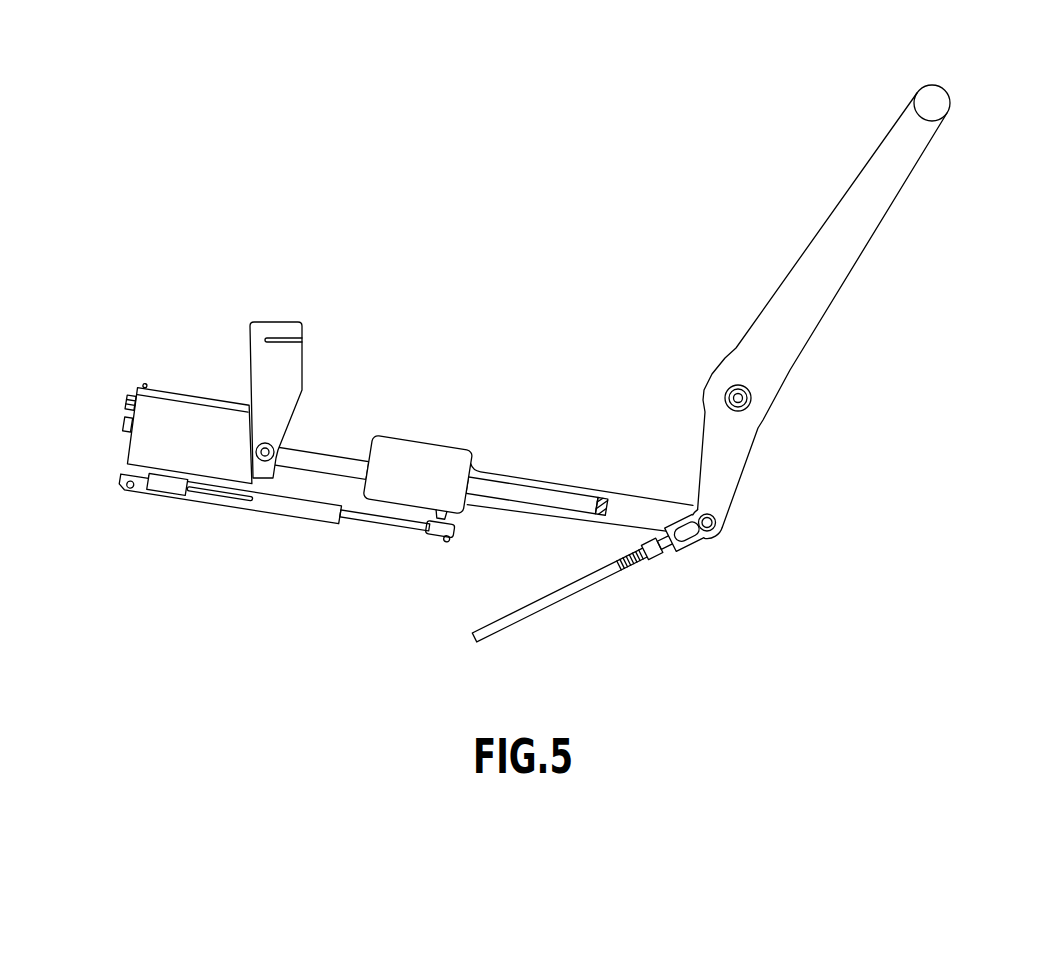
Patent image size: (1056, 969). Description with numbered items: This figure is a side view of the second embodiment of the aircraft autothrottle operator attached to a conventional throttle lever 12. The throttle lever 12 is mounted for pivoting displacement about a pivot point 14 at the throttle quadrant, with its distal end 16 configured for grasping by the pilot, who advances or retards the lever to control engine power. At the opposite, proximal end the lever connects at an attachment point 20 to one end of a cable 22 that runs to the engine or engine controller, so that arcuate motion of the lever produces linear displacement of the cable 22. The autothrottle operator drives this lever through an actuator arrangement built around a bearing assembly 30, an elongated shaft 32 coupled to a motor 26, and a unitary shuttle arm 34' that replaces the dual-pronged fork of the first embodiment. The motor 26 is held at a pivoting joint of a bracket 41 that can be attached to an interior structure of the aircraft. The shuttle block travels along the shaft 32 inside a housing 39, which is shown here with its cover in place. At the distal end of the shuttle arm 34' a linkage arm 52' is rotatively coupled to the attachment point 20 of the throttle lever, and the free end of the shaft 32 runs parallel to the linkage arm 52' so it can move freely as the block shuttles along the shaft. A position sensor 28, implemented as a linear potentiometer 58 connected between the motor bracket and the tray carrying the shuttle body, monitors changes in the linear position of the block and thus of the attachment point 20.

The throttle lever 12 is at (855, 298).
The pivot point 14 is at (748, 400).
The distal end 16 is at (950, 93).
The attachment point 20 is at (717, 537).
The cable 22 is at (545, 607).
The motor 26 is at (147, 445).
The position sensor 28 is at (278, 562).
The bearing assembly 30 is at (483, 449).
The shaft 32 is at (317, 458).
The shuttle arm 34' is at (587, 453).
The housing 39 is at (388, 448).
The bracket 41 is at (260, 332).
The linkage arm 52' is at (577, 473).
The linear potentiometer 58 is at (275, 507).